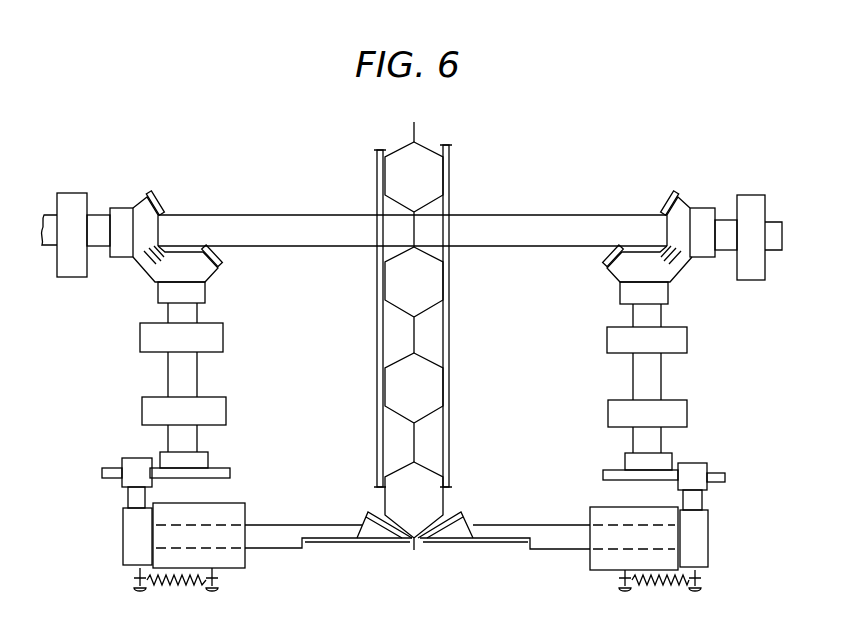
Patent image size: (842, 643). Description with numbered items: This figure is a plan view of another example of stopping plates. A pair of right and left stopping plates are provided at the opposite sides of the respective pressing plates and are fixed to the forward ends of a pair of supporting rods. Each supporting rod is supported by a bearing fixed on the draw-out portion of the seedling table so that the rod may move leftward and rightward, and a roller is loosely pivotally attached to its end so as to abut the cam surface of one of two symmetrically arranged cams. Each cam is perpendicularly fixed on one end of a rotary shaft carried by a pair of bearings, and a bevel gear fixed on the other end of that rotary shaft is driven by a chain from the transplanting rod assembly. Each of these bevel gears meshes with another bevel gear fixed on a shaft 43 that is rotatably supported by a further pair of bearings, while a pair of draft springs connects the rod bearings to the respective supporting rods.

The shaft 43 is at (515, 216).